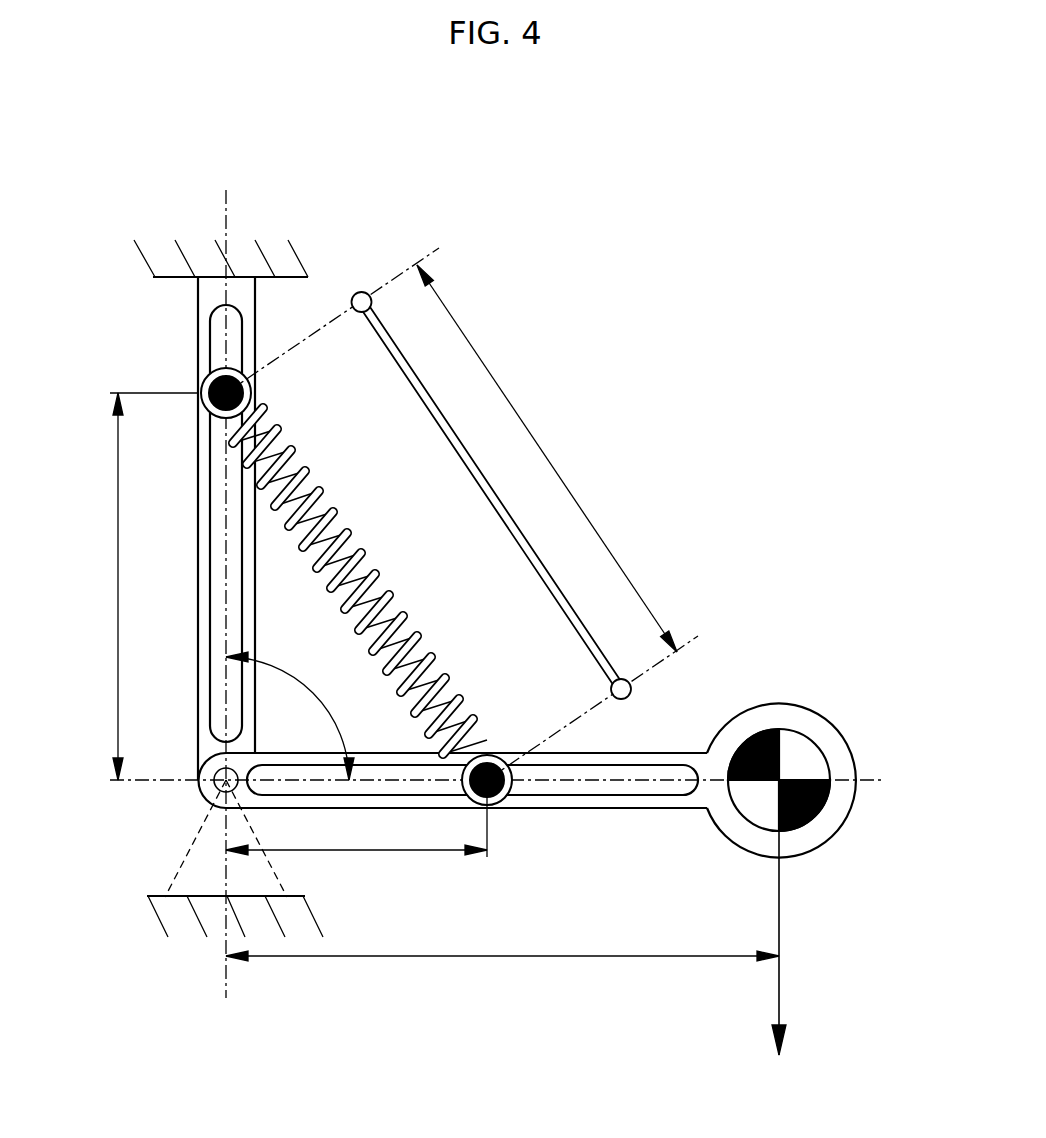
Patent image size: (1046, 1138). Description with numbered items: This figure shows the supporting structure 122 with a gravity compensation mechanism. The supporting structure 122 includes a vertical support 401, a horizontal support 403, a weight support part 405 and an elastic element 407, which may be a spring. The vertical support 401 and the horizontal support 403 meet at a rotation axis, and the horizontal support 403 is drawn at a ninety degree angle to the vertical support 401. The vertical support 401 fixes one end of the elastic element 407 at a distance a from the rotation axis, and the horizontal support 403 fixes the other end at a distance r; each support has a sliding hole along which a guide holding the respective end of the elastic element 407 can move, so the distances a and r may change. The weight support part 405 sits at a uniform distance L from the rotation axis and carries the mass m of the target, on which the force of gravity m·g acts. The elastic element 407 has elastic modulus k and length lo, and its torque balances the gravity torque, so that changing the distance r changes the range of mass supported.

The supporting structure 122 is at (593, 257).
The vertical support 401 is at (198, 322).
The horizontal support 403 is at (605, 810).
The weight support part 405 is at (832, 722).
The elastic element 407 is at (284, 432).